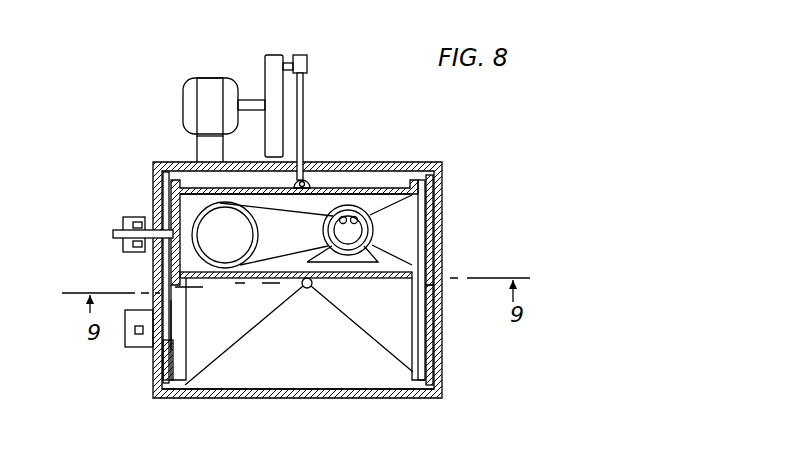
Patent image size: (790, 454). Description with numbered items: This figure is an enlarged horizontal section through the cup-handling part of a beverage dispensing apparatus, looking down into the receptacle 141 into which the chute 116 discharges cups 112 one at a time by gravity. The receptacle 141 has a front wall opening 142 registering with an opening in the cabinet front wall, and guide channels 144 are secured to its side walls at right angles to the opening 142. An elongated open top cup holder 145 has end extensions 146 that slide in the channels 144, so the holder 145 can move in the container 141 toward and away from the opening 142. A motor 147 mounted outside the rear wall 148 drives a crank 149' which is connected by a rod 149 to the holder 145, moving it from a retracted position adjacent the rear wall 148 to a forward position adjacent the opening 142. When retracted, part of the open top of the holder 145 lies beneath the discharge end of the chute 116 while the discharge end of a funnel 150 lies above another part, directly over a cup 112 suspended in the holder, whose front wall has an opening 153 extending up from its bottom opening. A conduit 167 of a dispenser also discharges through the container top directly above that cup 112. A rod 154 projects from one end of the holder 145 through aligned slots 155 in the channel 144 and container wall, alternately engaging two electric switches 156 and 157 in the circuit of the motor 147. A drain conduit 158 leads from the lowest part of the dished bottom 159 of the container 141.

The cup 112 is at (337, 242).
The chute 116 is at (238, 270).
The receptacle 141 is at (443, 227).
The front wall opening 142 is at (394, 392).
The guide channels 144 is at (160, 370).
The cup holder 145 is at (385, 184).
The end extensions 146 is at (430, 255).
The motor 147 is at (183, 106).
The rear wall 148 is at (357, 163).
The rod 149 is at (332, 121).
The crank 149' is at (312, 39).
The funnel 150 is at (343, 212).
The front wall opening of holder 153 is at (357, 262).
The rod 154 is at (113, 239).
The slots 155 is at (170, 326).
The electric switch 156 is at (128, 220).
The electric switch 157 is at (133, 337).
The drain conduit 158 is at (306, 290).
The dished bottom 159 is at (248, 333).
The conduit 167 is at (360, 220).